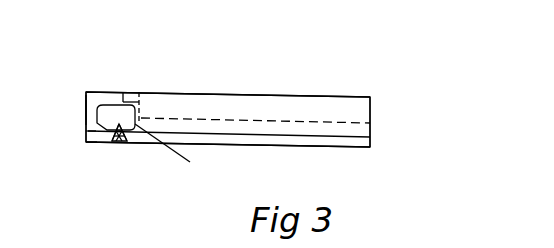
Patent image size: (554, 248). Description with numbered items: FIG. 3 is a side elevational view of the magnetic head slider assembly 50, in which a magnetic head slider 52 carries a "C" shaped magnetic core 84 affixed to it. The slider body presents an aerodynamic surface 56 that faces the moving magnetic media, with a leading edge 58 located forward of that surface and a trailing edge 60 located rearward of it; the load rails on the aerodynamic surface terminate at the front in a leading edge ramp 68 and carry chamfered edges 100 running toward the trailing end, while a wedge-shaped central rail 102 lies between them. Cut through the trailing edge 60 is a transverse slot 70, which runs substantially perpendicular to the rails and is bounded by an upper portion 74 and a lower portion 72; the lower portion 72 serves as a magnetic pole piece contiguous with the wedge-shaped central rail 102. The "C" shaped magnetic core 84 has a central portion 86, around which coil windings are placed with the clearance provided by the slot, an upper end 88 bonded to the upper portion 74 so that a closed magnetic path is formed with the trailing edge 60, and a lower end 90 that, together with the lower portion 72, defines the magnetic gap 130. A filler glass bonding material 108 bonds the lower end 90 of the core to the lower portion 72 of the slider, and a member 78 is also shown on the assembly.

The magnetic head slider assembly 50 is at (314, 86).
The magnetic head slider 52 is at (348, 96).
The aerodynamic surface 56 is at (346, 148).
The leading edge 58 is at (372, 108).
The trailing edge 60 is at (115, 89).
The leading edge ramp 68 is at (372, 130).
The transverse slot 70 is at (107, 131).
The lower portion 72 is at (125, 140).
The upper portion 74 is at (127, 100).
The member 78 is at (87, 5).
The "C" shaped magnetic core 84 is at (72, 112).
The central portion 86 is at (84, 105).
The upper end 88 is at (90, 91).
The lower end 90 is at (88, 133).
The chamfered edges 100 is at (282, 140).
The wedge-shaped central rail 102 is at (258, 243).
The filler glass bonding material 108 is at (113, 136).
The magnetic gap 130 is at (119, 141).